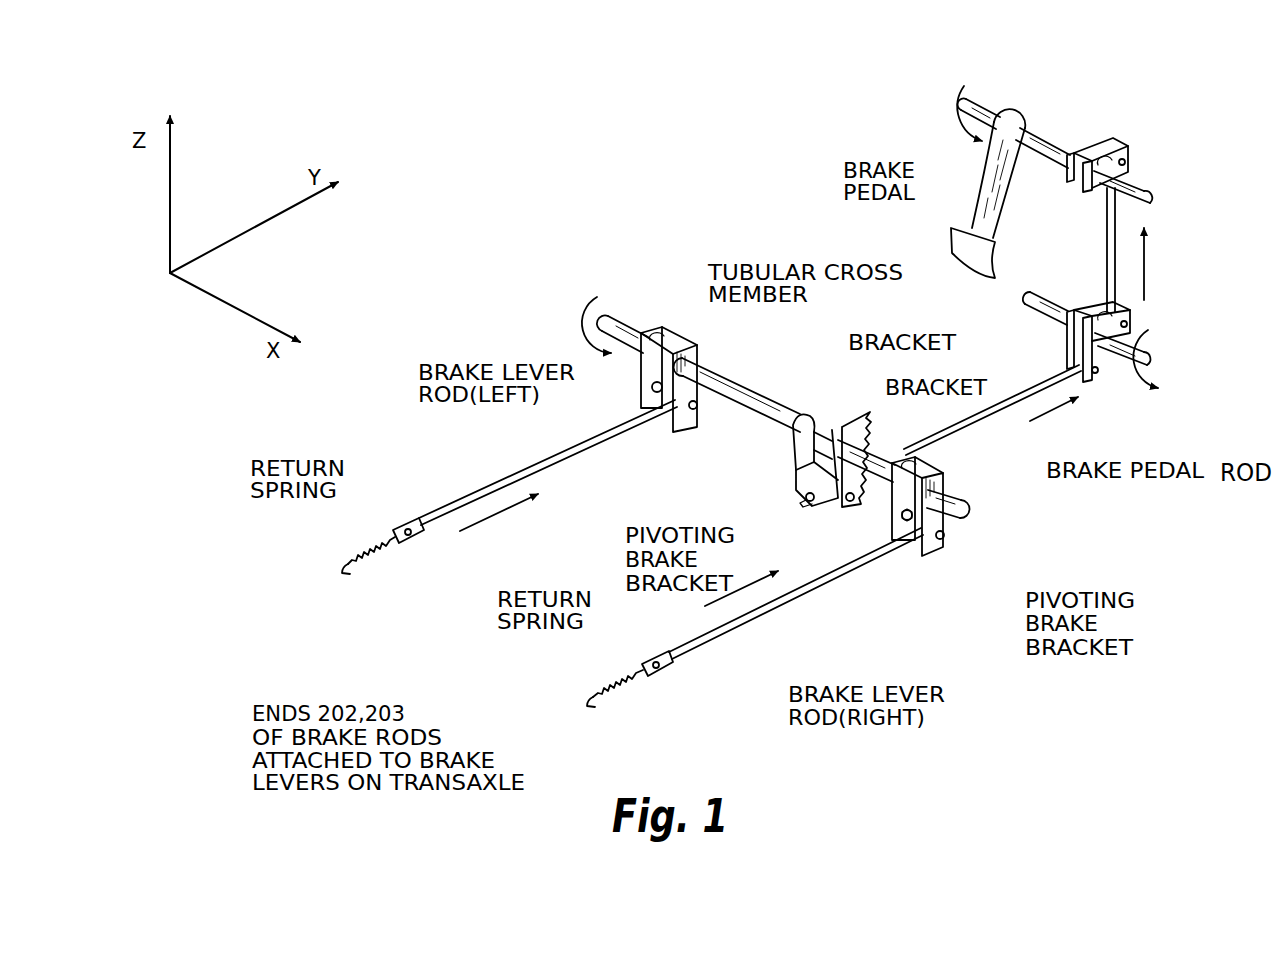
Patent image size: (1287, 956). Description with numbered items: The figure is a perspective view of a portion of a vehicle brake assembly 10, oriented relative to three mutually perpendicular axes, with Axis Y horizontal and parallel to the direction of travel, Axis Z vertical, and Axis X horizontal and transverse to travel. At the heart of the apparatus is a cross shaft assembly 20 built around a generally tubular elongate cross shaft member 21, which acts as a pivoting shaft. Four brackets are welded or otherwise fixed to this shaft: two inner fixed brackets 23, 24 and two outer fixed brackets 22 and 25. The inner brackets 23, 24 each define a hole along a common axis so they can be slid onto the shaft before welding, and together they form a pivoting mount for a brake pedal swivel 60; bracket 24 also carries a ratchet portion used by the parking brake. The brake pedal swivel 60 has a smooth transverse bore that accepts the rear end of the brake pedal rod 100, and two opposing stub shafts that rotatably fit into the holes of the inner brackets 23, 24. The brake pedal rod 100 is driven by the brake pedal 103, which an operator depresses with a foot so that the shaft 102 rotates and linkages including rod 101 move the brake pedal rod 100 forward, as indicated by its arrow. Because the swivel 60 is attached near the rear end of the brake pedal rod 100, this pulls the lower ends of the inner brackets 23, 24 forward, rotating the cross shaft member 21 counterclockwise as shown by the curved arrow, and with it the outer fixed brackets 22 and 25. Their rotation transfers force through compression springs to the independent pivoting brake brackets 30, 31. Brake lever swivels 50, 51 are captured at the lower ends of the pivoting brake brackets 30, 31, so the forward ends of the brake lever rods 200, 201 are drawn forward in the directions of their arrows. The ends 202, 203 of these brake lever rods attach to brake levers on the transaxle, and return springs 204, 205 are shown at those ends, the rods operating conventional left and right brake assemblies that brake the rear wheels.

The brake assembly 10 is at (583, 173).
The cross shaft assembly 20 is at (564, 283).
The elongate tubular cross shaft member 21 is at (768, 403).
The outer fixed bracket 22 is at (658, 370).
The inner fixed bracket 23 is at (806, 413).
The inner fixed bracket 24 is at (845, 437).
The outer fixed bracket 25 is at (893, 514).
The pivoting brake bracket 30 is at (686, 418).
The pivoting brake bracket 31 is at (955, 545).
The brake lever swivel 50 is at (698, 407).
The brake lever swivel 51 is at (946, 534).
The brake pedal swivel 60 is at (804, 494).
The brake pedal rod 100 is at (991, 418).
The rod 101 is at (1110, 260).
The shaft 102 is at (1046, 146).
The brake pedal 103 is at (950, 250).
The brake lever rod 200 is at (522, 470).
The brake lever rod 201 is at (793, 598).
The end of brake rod 202 is at (406, 545).
The end of brake rod 203 is at (649, 679).
The return spring 204 is at (343, 560).
The return spring 205 is at (598, 684).